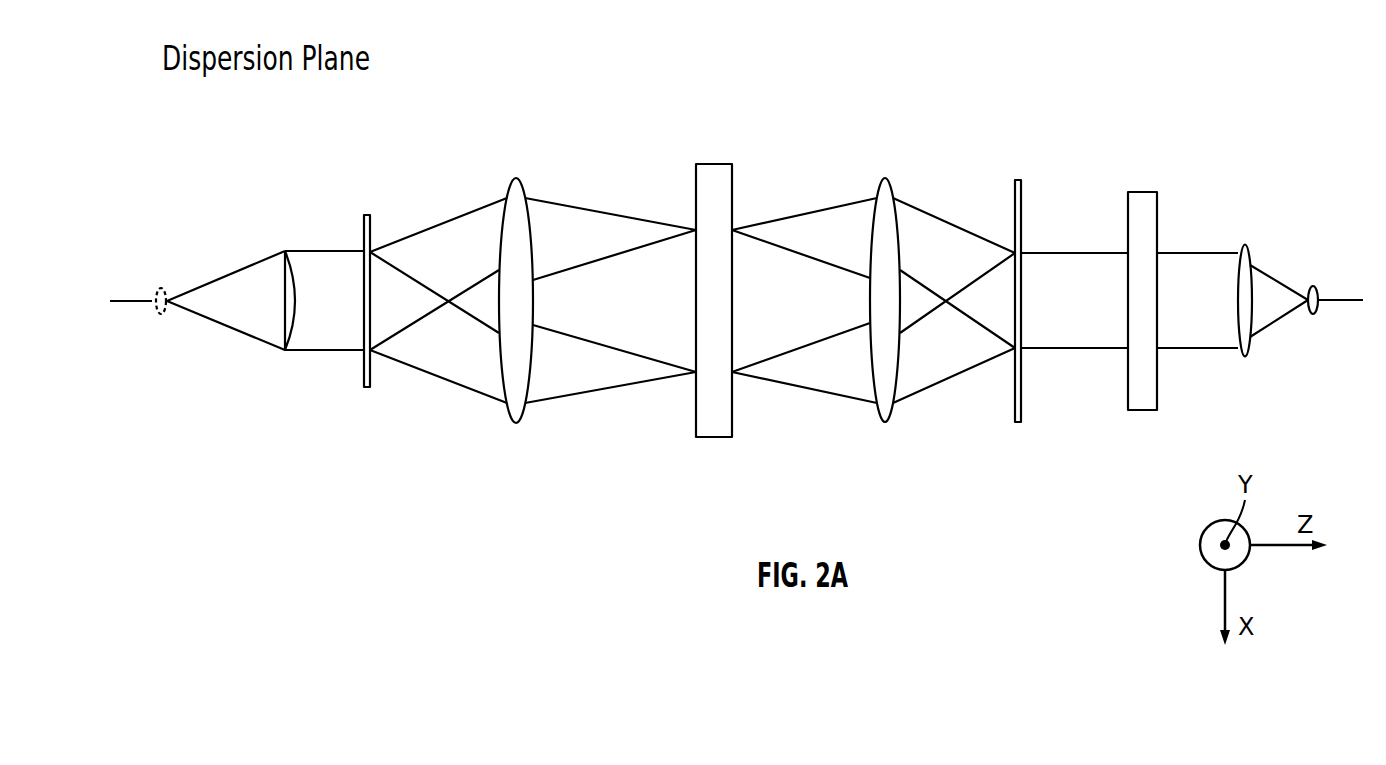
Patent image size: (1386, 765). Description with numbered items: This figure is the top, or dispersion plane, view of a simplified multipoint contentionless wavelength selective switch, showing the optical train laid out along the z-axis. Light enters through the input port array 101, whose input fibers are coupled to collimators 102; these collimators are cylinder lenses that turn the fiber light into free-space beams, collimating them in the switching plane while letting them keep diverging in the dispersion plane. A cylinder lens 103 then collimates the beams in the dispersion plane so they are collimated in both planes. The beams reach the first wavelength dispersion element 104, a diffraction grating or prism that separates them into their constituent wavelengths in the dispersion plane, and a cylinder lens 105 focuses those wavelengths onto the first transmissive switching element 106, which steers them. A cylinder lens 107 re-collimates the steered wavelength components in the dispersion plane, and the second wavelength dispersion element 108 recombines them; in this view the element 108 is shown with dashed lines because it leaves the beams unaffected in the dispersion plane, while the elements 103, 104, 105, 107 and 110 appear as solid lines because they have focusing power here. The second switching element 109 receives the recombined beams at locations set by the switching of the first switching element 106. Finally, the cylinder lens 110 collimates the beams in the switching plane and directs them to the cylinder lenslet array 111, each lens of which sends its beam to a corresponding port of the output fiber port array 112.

The input port array 101 is at (120, 283).
The collimators 102 is at (165, 264).
The cylinder lens 103 is at (280, 223).
The first wavelength dispersion element 104 is at (363, 194).
The cylinder lens 105 is at (511, 154).
The first transmissive switching element 106 is at (708, 136).
The cylinder lens 107 is at (882, 151).
The second wavelength dispersion element 108 is at (1013, 151).
The second switching element 109 is at (1138, 169).
The cylinder lens 110 is at (1240, 223).
The cylinder lenslet array 111 is at (1308, 266).
The output fiber port array 112 is at (1347, 274).